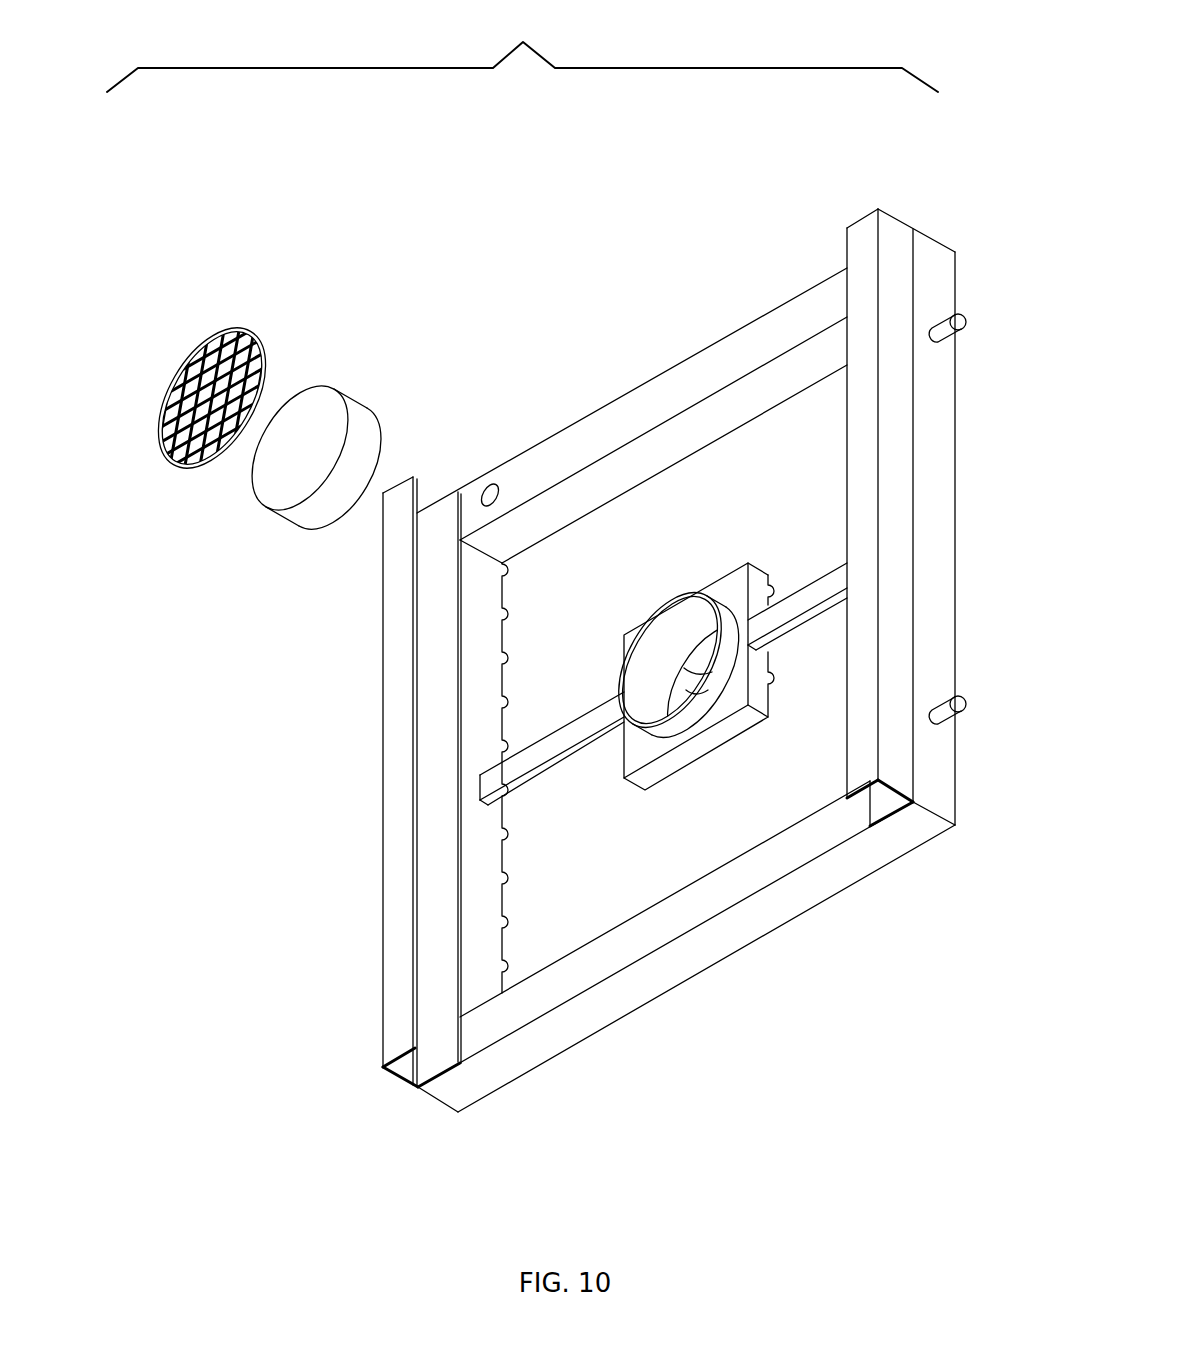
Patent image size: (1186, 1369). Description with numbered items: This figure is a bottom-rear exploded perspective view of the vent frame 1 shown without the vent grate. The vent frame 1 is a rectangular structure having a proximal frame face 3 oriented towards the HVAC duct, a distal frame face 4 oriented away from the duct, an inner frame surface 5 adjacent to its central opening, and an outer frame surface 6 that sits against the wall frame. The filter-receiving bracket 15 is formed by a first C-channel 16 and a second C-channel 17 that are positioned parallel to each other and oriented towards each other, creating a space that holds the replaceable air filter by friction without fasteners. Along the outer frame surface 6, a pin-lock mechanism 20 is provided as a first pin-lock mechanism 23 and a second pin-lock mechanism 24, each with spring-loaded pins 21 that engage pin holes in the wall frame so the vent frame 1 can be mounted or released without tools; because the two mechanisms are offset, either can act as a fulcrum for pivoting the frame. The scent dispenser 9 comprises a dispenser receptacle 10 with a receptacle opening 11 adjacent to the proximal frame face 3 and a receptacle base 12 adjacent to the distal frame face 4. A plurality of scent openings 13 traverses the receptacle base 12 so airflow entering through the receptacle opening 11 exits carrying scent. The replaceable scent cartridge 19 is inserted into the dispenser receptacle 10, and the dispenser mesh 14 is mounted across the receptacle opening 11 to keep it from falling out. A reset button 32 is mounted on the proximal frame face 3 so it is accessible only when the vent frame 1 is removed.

The vent frame 1 is at (658, 660).
The proximal frame face 3 is at (620, 404).
The distal frame face 4 is at (658, 660).
The inner frame surface 5 is at (495, 847).
The outer frame surface 6 is at (722, 953).
The scent dispenser 9 is at (678, 806).
The dispenser receptacle 10 is at (687, 638).
The receptacle opening 11 is at (658, 622).
The receptacle base 12 is at (702, 652).
The plurality of scent openings 13 is at (684, 672).
The dispenser mesh 14 is at (256, 332).
The filter-receiving bracket 15 is at (621, 648).
The first C-channel 16 is at (858, 462).
The second C-channel 17 is at (392, 868).
The replaceable scent cartridge 19 is at (303, 513).
The pin-lock mechanism 20 is at (979, 492).
The plurality of spring-loaded pins 21 is at (979, 492).
The first pin-lock mechanism 23 is at (982, 306).
The second pin-lock mechanism 24 is at (984, 686).
The reset button 32 is at (490, 481).